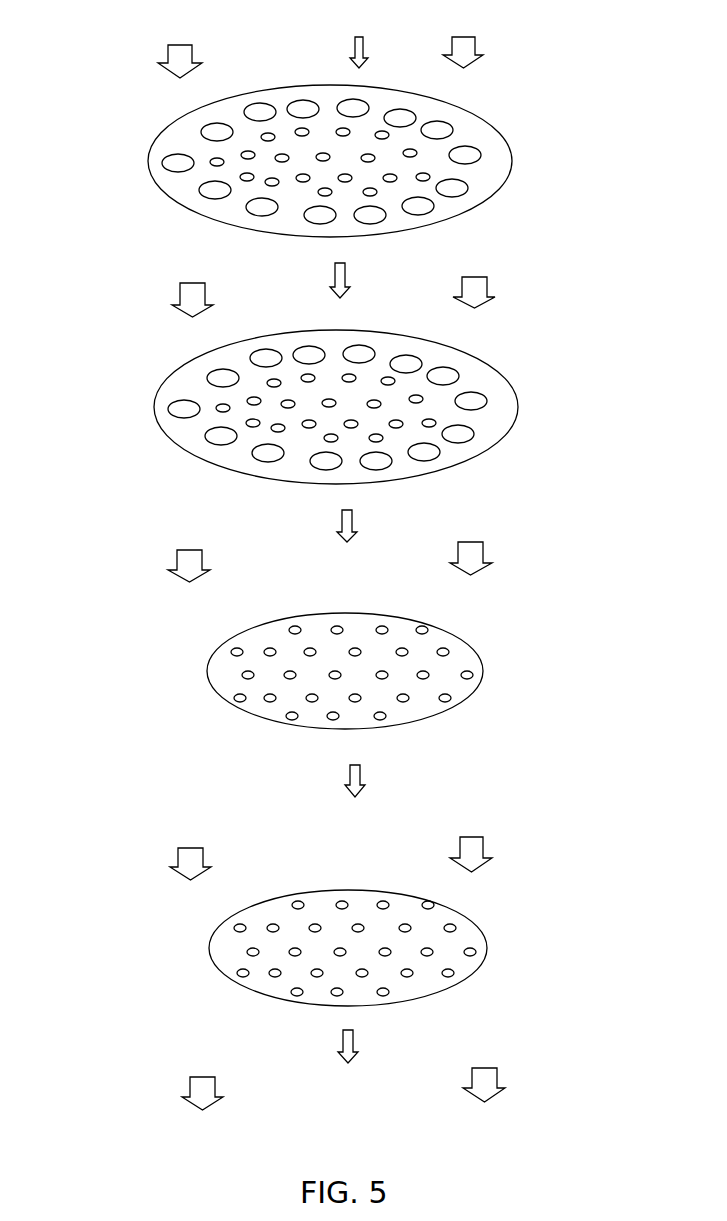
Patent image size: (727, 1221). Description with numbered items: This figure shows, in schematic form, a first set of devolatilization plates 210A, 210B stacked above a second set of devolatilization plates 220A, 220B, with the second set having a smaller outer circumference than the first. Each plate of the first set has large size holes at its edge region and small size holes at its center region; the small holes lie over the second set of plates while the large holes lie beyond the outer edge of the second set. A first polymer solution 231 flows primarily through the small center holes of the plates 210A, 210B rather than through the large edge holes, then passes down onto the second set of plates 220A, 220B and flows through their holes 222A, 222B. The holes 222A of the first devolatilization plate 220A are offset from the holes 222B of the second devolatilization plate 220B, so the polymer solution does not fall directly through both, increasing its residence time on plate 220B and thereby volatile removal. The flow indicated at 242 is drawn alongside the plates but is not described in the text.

The first fluid flow (arrow) 242 is at (162, 60).
The first polymer solution 231 is at (353, 47).
The first devolatilization plate of the first set 210A is at (343, 161).
The second devolatilization plate of the first set 210B is at (350, 405).
The first devolatilization plate 220A is at (406, 659).
The second devolatilization plate 220B is at (409, 942).
The holes of the first devolatilization plate 222A is at (424, 630).
The holes of the second devolatilization plate 222B is at (445, 917).